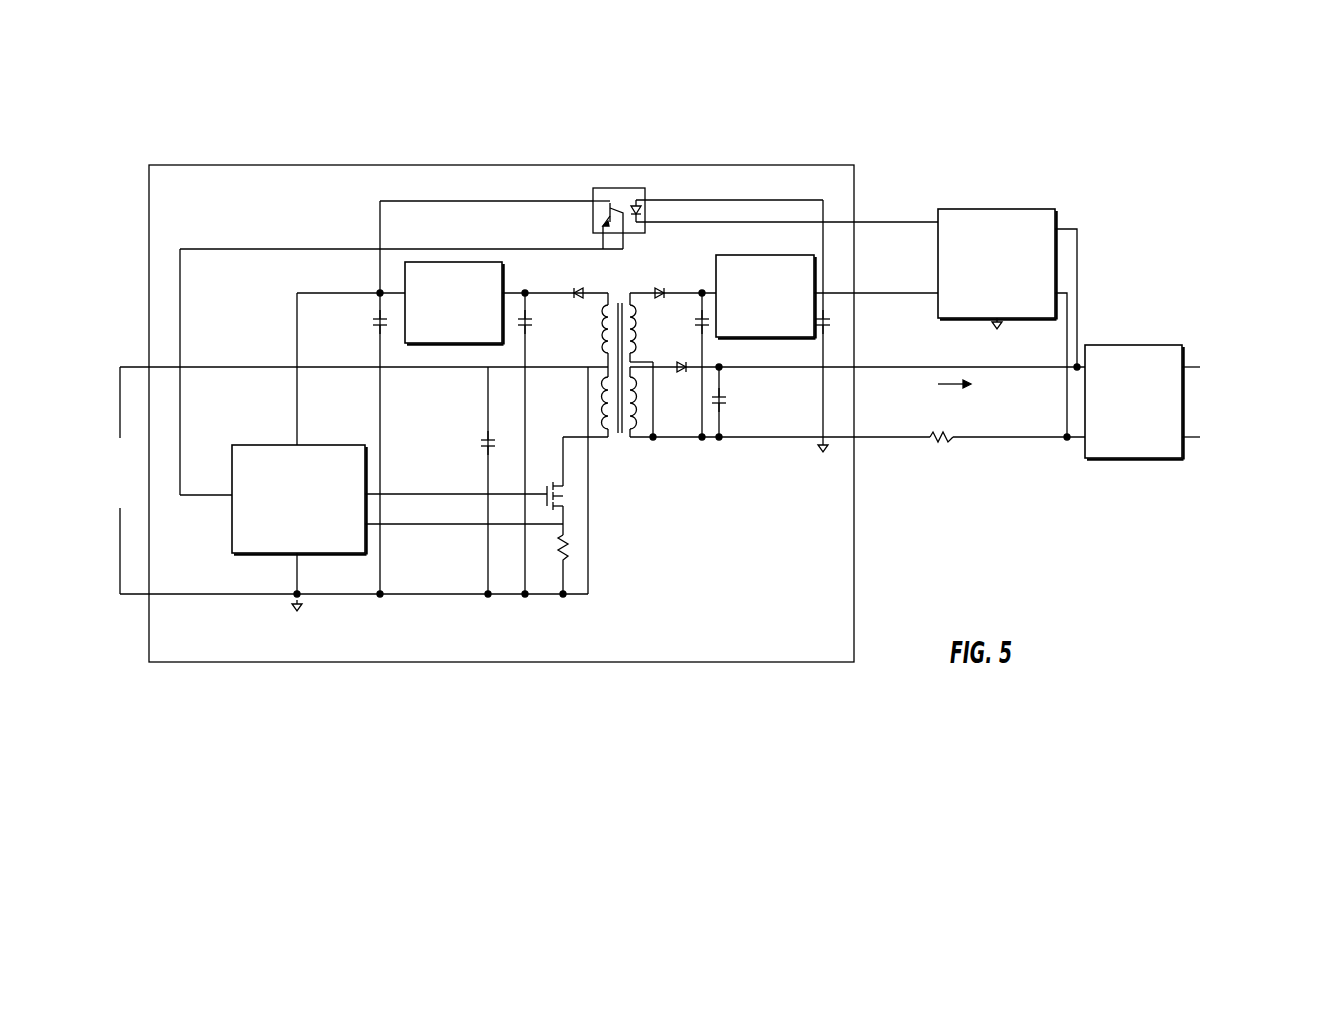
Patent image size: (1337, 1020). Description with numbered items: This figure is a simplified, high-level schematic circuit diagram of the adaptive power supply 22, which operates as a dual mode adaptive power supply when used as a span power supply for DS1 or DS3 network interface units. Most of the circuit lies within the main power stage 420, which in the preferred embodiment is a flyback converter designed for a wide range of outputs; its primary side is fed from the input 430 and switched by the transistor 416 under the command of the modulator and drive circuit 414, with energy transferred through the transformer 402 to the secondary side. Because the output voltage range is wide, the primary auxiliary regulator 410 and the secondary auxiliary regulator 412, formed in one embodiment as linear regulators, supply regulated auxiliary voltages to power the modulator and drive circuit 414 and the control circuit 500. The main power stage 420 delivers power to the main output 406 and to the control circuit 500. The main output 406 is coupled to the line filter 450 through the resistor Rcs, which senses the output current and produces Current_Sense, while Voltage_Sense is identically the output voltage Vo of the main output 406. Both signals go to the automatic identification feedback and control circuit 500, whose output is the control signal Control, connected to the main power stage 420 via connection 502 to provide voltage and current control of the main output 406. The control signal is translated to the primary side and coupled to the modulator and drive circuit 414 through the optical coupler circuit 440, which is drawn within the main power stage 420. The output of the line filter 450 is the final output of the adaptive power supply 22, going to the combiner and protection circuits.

The adaptive power supply 22 is at (610, 105).
The main power stage 420 is at (625, 624).
The input 430 is at (103, 452).
The modulator and drive circuit 414 is at (258, 445).
The primary auxiliary regulator 410 is at (505, 278).
The switching transistor 416 is at (568, 492).
The transformer 402 is at (627, 438).
The main output 406 is at (808, 400).
The secondary auxiliary regulator 412 is at (757, 256).
The optical coupler circuit 440 is at (640, 188).
The control signal connection 502 is at (890, 198).
The control circuit 500 is at (988, 209).
The line filter 450 is at (1128, 345).